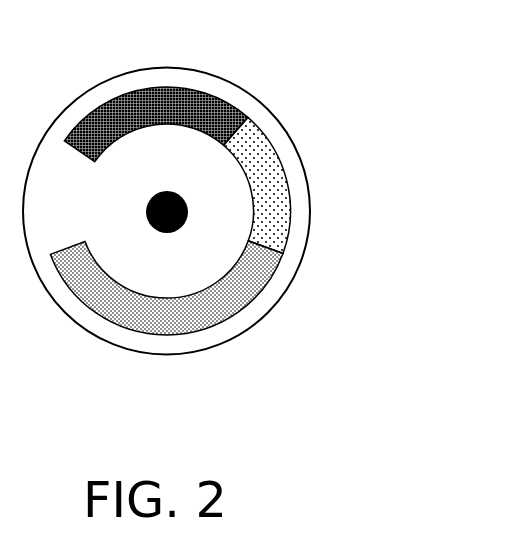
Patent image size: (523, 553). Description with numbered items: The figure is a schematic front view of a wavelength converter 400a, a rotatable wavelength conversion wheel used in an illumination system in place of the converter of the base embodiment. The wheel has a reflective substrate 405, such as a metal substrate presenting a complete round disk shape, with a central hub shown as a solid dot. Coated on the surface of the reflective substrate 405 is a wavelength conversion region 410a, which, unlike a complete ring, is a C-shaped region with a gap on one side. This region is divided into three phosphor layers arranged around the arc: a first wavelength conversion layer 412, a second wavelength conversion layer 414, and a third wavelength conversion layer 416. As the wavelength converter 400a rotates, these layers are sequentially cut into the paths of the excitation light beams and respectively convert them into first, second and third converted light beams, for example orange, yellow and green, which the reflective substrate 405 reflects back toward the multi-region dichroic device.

The wavelength converter 400a is at (231, 209).
The reflective substrate 405 is at (175, 78).
The wavelength conversion region 410a is at (245, 208).
The first wavelength conversion layer 412 is at (245, 115).
The second wavelength conversion layer 414 is at (268, 183).
The third wavelength conversion layer 416 is at (210, 283).